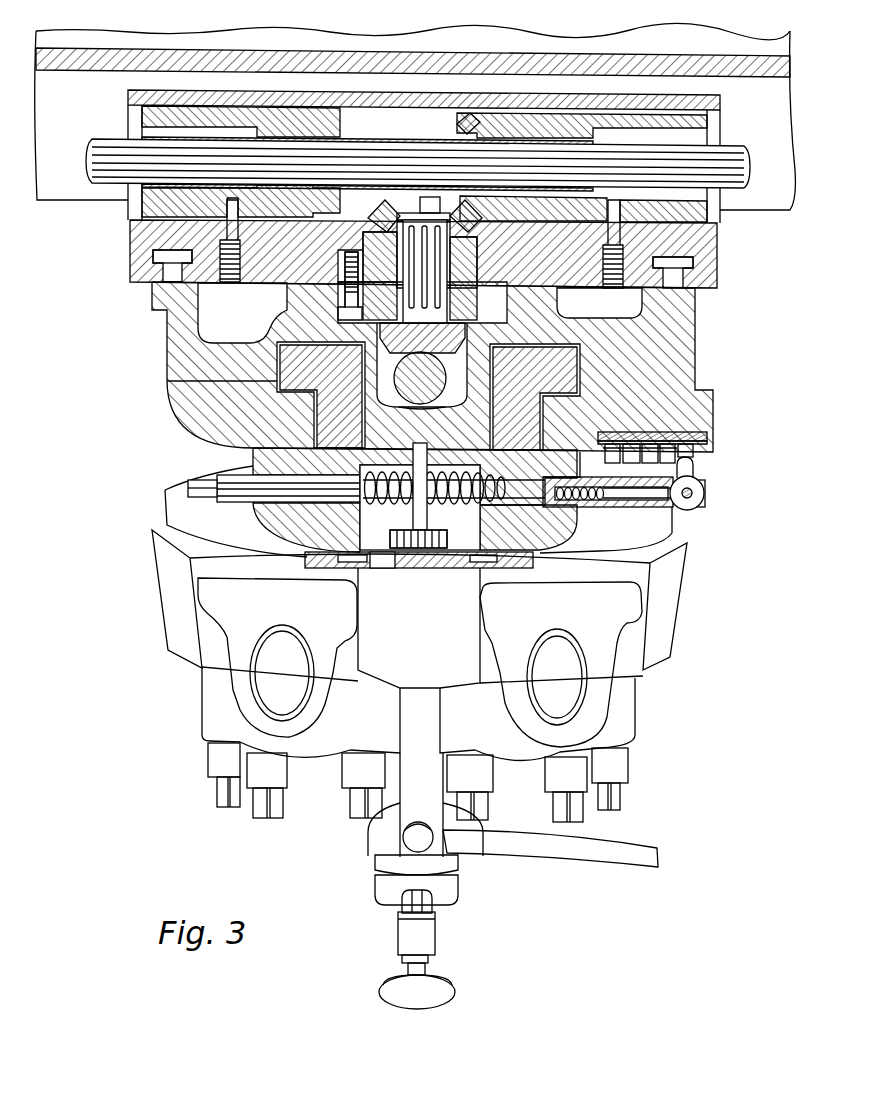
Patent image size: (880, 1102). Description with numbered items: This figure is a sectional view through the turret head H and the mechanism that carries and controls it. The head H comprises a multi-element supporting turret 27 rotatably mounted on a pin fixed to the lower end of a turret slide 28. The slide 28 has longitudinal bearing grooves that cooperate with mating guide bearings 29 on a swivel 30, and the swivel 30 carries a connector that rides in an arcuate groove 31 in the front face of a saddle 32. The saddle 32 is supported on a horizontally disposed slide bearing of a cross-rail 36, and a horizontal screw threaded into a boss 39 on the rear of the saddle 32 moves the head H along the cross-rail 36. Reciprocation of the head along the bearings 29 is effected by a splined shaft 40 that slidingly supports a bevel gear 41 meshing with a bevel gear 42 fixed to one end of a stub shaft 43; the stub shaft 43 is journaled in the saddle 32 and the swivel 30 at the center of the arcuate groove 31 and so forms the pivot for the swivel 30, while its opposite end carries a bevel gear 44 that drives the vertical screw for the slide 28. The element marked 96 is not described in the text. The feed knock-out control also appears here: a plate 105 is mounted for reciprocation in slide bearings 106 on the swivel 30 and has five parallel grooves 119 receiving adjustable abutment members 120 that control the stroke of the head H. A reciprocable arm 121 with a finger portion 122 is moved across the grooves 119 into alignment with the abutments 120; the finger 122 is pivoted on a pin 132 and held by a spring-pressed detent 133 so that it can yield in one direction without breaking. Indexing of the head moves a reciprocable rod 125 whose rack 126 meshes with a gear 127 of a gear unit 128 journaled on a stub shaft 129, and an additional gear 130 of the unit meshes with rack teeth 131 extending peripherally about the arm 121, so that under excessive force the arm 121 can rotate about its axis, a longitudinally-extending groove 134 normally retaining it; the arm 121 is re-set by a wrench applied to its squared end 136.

The cross-rail 36 is at (547, 35).
The boss 39 is at (670, 98).
The splined shaft 40 is at (738, 146).
The bevel gear 41 is at (462, 110).
The bevel gear 42 is at (386, 210).
The stub shaft 43 is at (446, 306).
The bevel gear 44 is at (446, 370).
The ball seat 96 is at (440, 403).
The arcuate groove 31 is at (152, 256).
The saddle 32 is at (717, 259).
The swivel 30 is at (695, 352).
The guide bearings 29 is at (295, 433).
The turret slide 28 is at (254, 460).
The plate 105 is at (700, 433).
The slide bearings 106 is at (700, 443).
The parallel grooves 119 is at (697, 448).
The abutment members 120 is at (606, 459).
The finger portion 122 is at (694, 470).
The pin 132 is at (705, 494).
The squared end 136 is at (197, 498).
The longitudinally-extending groove 134 is at (246, 502).
The gear unit 128 is at (410, 521).
The rack teeth 131 is at (478, 505).
The gear 130 is at (434, 537).
The gear 127 is at (442, 568).
The stub shaft 129 is at (416, 568).
The rack 126 is at (389, 569).
The reciprocable rod 125 is at (382, 549).
The reciprocable arm 121 is at (604, 508).
The spring-pressed detent 133 is at (646, 497).
The turret head H is at (172, 626).
The supporting turret 27 is at (625, 708).